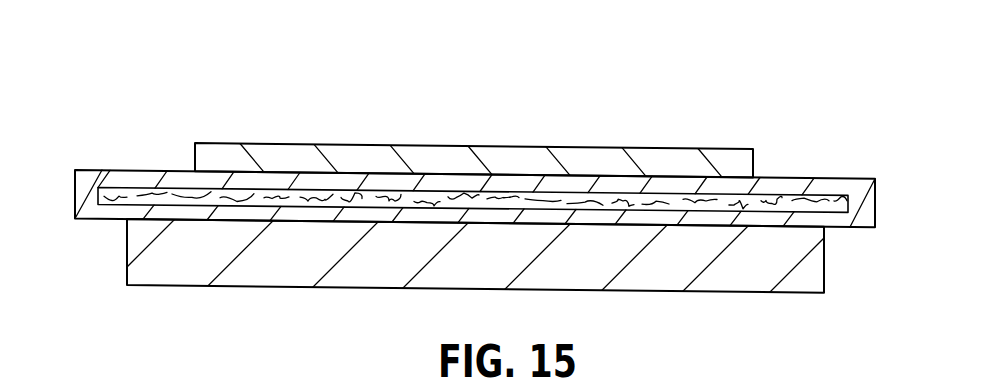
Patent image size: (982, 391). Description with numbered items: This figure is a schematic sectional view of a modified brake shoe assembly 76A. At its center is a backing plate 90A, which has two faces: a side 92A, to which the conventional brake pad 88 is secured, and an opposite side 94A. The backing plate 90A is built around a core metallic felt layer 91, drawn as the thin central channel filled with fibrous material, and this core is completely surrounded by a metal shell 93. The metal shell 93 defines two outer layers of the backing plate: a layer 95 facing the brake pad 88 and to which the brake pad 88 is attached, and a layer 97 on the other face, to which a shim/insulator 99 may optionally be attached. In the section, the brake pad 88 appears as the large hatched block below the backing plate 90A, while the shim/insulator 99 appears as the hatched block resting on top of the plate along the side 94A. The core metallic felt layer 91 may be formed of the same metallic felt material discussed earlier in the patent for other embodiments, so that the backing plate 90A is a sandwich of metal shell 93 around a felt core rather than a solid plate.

The brake shoe assembly 76A is at (253, 47).
The brake pad 88 is at (247, 278).
The backing plate 90A is at (60, 235).
The core metallic felt layer 91 is at (100, 184).
The side 92A is at (115, 220).
The metal shell 93 is at (826, 186).
The side 94A is at (167, 170).
The layer 95 is at (832, 221).
The layer 97 is at (768, 182).
The shim/insulator 99 is at (502, 155).